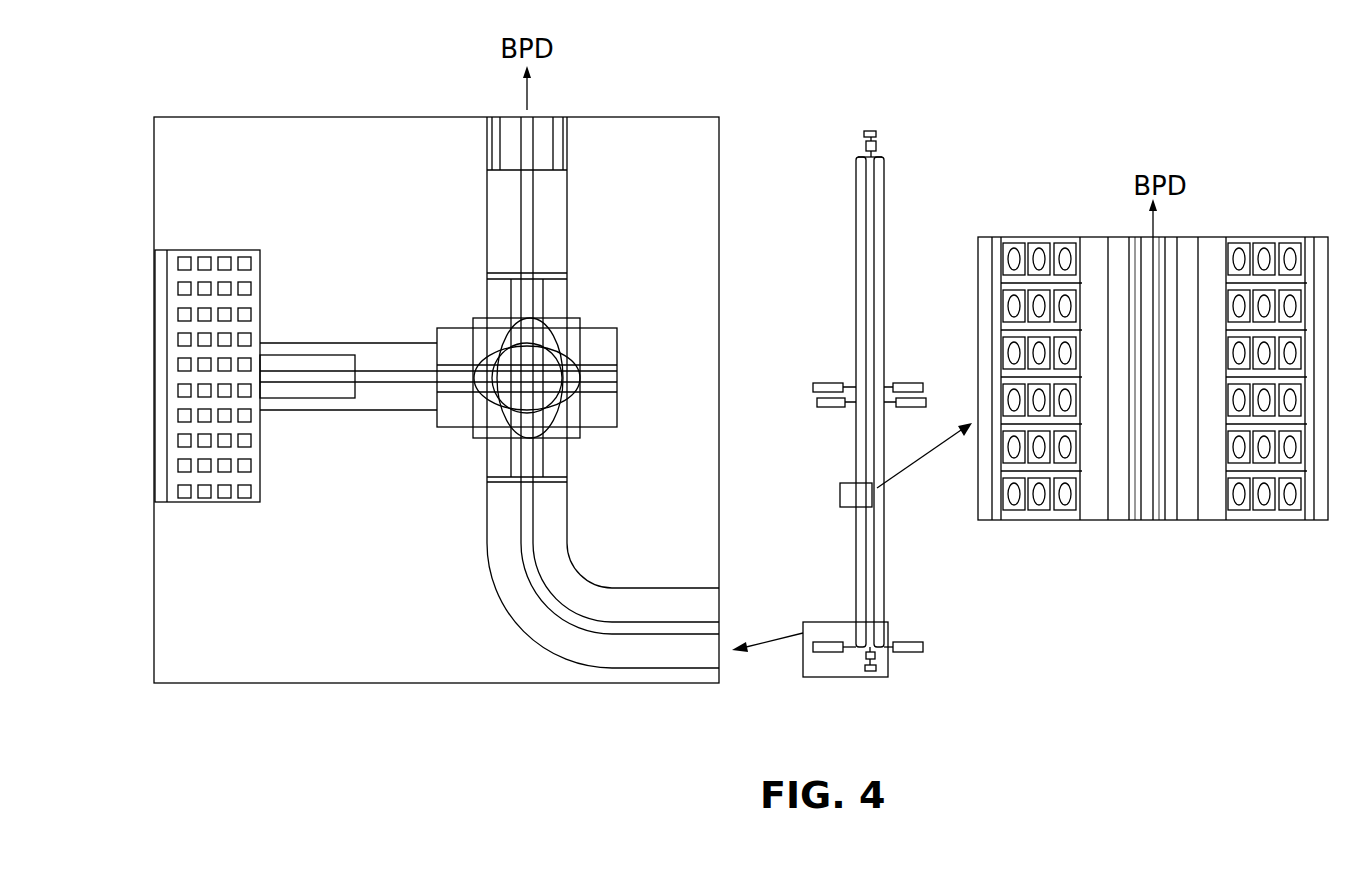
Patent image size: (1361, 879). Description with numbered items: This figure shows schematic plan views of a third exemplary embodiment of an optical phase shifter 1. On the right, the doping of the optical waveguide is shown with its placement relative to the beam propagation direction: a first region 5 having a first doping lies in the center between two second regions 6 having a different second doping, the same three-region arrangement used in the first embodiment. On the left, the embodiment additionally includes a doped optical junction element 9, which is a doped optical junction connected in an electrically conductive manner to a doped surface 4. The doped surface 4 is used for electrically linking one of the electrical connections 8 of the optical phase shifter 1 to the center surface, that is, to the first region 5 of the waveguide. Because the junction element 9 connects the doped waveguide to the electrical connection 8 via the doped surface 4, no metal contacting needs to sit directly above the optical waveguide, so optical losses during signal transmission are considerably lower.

The optical phase shifter 1 is at (925, 193).
The doped surface 4 is at (527, 213).
The first region 5 is at (1146, 498).
The second regions 6 is at (1135, 508).
The electrical connections 8 is at (285, 390).
The doped optical junction element 9 is at (590, 454).